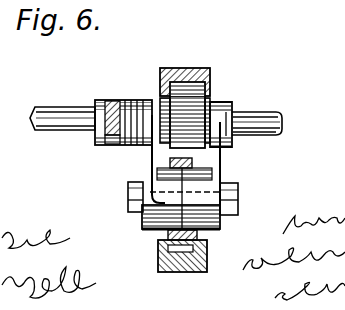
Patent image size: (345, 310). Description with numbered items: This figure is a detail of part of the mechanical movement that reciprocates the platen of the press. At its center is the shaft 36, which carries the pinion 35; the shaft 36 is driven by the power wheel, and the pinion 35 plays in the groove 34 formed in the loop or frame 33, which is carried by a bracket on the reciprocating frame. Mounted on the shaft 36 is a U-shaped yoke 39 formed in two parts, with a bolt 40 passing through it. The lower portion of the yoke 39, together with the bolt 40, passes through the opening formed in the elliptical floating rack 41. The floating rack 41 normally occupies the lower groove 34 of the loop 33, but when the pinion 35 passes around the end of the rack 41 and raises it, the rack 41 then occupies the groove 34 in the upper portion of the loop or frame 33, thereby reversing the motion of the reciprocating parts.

The loop or frame 33 is at (208, 70).
The groove 34 is at (197, 250).
The pinion 35 is at (217, 97).
The shaft 36 is at (272, 112).
The U-shaped yoke 39 is at (222, 163).
The bolt 40 is at (240, 198).
The elliptical floating rack 41 is at (177, 159).